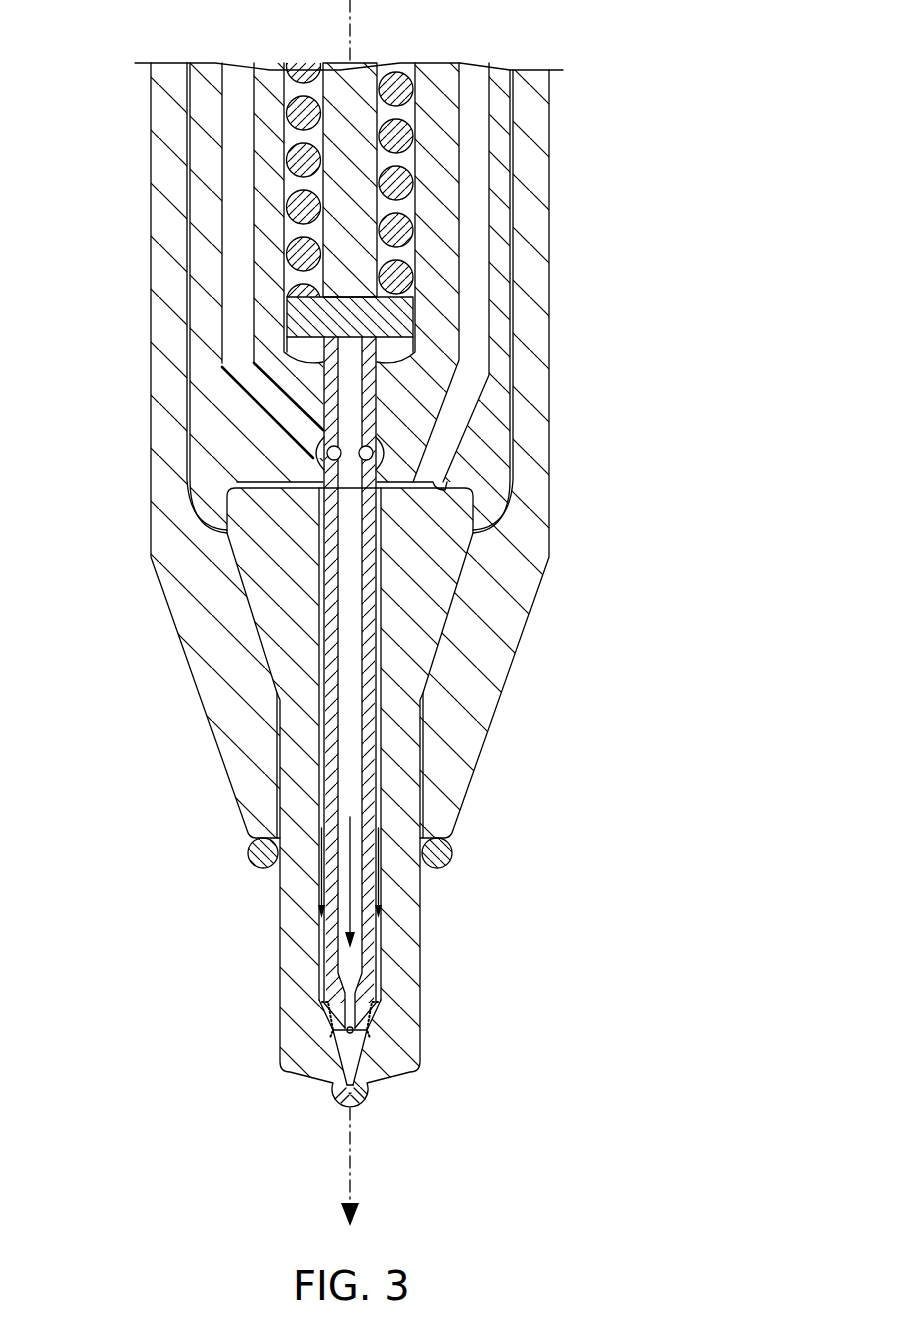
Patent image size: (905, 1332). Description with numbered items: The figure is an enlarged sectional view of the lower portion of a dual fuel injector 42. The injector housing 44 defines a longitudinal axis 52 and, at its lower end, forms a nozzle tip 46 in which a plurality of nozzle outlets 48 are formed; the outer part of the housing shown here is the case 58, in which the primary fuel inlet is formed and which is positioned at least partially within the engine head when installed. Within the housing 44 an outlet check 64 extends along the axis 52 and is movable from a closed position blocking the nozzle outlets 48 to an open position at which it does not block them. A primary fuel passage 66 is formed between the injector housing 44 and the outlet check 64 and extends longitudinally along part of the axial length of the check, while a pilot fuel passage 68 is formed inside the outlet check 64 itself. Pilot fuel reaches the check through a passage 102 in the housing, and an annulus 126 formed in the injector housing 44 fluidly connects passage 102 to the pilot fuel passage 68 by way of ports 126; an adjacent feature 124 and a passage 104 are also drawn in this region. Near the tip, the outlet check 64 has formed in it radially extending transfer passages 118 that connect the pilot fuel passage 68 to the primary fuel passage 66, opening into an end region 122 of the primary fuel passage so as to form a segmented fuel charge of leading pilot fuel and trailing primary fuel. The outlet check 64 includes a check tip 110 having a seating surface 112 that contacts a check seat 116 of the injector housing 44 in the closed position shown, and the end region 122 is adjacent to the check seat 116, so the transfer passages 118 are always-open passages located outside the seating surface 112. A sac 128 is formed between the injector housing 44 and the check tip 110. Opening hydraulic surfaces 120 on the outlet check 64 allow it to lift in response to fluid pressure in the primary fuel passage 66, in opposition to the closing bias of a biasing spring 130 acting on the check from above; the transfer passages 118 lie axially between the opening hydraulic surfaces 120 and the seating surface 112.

The dual fuel injector 42 is at (88, 306).
The injector housing 44 is at (151, 140).
The nozzle tip 46 is at (420, 960).
The nozzle outlets 48 is at (332, 1087).
The longitudinal axis 52 is at (348, 29).
The case 58 is at (550, 258).
The outlet check 64 is at (372, 652).
The primary fuel passage 66 is at (378, 730).
The pilot fuel passage 68 is at (332, 730).
The passage 102 is at (228, 303).
The fuel return channel 104 is at (490, 303).
The check tip 110 is at (372, 1040).
The seating surface 112 is at (363, 1063).
The check seat 116 is at (327, 1072).
The transfer passages 118 is at (375, 1032).
The opening hydraulic surfaces 120 is at (322, 1002).
The end region 122 is at (333, 1031).
The guide ball 124 is at (378, 450).
The annulus 126 is at (328, 460).
The sac 128 is at (347, 1104).
The biasing spring 130 is at (396, 74).